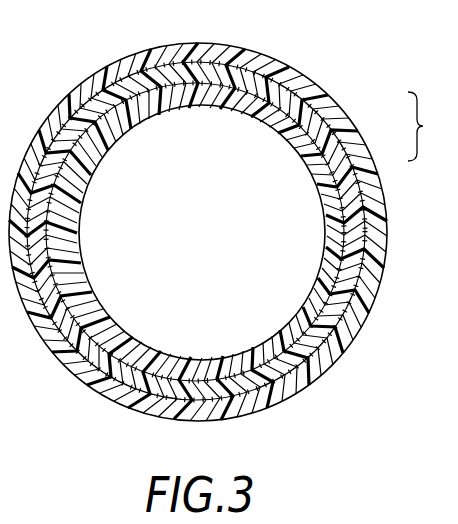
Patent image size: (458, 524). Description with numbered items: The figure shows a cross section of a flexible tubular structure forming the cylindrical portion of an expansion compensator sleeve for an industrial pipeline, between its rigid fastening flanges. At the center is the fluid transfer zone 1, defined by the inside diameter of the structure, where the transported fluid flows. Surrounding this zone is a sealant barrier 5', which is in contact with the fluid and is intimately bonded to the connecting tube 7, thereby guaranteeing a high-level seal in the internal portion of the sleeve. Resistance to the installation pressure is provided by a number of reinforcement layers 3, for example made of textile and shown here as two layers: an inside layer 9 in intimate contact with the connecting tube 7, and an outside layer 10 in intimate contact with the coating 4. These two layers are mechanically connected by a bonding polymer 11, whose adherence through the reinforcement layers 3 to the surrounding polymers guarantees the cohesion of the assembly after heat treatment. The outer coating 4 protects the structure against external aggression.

The fluid transfer zone 1 is at (140, 322).
The coating 4 is at (221, 53).
The bonding polymer 11 is at (288, 375).
The connecting tube 7 is at (352, 251).
The outside layer 10 is at (316, 121).
The inside layer 9 is at (287, 116).
The reinforcement layers 3 is at (423, 126).
The sealant barrier 5' is at (236, 232).